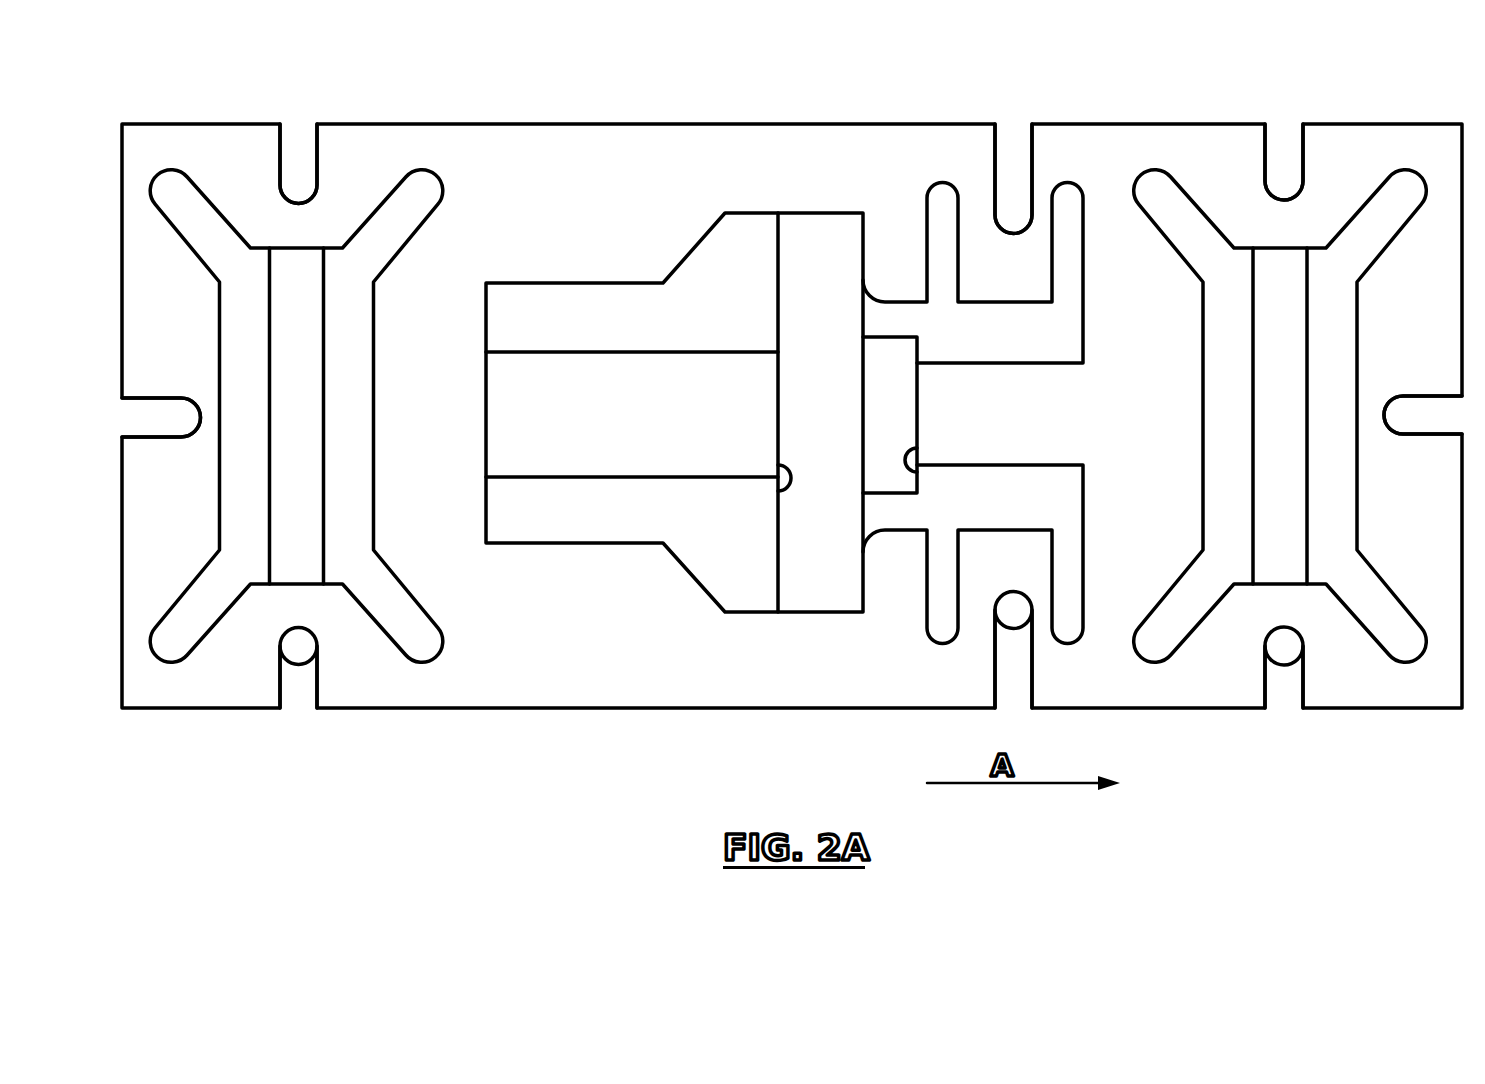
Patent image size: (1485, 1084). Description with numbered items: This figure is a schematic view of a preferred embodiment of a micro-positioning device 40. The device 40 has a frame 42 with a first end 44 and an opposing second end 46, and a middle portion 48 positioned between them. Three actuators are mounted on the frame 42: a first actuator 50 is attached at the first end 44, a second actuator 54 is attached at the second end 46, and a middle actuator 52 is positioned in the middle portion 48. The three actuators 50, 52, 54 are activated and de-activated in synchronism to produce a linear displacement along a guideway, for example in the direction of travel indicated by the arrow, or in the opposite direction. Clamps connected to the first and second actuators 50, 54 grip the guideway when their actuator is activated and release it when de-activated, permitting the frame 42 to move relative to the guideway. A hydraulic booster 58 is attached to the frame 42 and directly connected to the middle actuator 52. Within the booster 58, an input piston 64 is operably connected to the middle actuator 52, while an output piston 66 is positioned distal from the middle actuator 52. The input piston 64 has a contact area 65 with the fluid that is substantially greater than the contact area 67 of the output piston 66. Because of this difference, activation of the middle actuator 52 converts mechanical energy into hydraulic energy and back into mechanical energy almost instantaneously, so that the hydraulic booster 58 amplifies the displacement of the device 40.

The micro-positioning device 40 is at (893, 96).
The frame 42 is at (662, 115).
The first end 44 is at (332, 124).
The second end 46 is at (1318, 124).
The middle portion 48 is at (798, 124).
The first actuator 50 is at (323, 408).
The middle actuator 52 is at (563, 352).
The second actuator 54 is at (1308, 355).
The hydraulic booster 58 is at (768, 310).
The input piston 64 is at (778, 396).
The contact area 65 is at (778, 490).
The output piston 66 is at (918, 398).
The contact area 67 is at (918, 471).